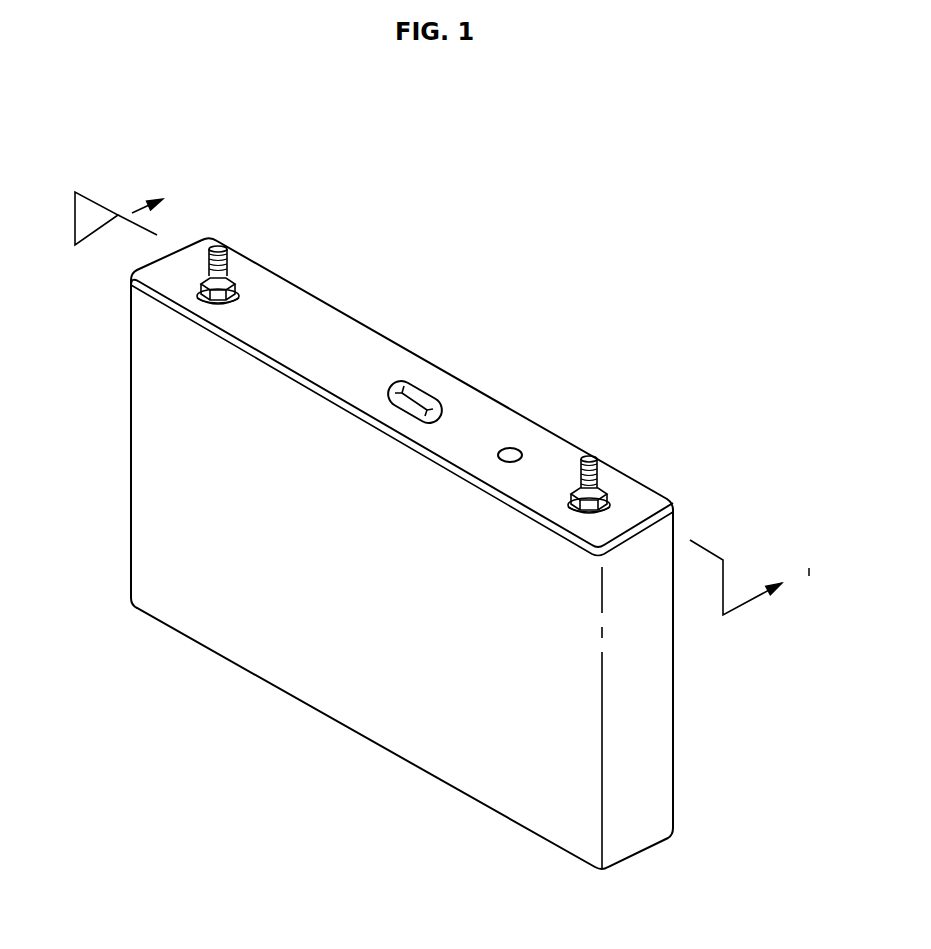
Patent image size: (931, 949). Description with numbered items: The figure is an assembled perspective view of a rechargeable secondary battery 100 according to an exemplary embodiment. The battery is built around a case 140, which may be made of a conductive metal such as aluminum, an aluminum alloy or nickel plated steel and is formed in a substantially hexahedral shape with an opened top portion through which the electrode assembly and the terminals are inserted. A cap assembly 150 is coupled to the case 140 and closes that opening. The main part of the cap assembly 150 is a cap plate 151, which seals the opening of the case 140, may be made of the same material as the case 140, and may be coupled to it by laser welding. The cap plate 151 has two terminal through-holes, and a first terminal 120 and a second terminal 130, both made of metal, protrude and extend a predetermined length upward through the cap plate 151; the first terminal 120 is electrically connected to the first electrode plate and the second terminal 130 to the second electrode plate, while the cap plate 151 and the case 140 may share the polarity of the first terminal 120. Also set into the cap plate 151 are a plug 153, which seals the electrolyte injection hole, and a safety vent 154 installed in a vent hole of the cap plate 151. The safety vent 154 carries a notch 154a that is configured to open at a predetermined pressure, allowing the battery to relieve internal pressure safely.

The secondary battery 100 is at (74, 128).
The first terminal 120 is at (232, 234).
The second terminal 130 is at (603, 449).
The case 140 is at (345, 710).
The cap assembly 150 is at (308, 308).
The cap plate 151 is at (355, 347).
The plug 153 is at (513, 449).
The safety vent 154 is at (420, 385).
The notch 154a is at (427, 403).